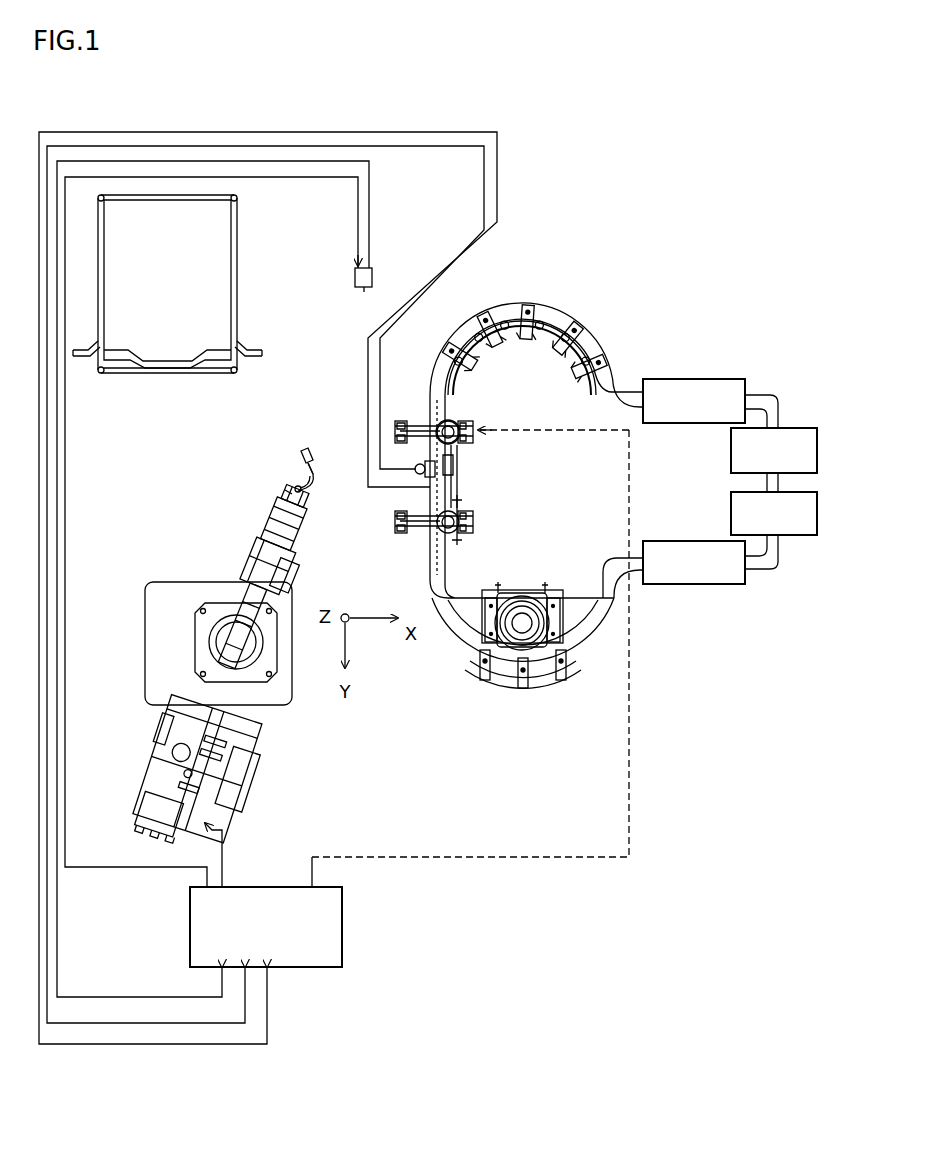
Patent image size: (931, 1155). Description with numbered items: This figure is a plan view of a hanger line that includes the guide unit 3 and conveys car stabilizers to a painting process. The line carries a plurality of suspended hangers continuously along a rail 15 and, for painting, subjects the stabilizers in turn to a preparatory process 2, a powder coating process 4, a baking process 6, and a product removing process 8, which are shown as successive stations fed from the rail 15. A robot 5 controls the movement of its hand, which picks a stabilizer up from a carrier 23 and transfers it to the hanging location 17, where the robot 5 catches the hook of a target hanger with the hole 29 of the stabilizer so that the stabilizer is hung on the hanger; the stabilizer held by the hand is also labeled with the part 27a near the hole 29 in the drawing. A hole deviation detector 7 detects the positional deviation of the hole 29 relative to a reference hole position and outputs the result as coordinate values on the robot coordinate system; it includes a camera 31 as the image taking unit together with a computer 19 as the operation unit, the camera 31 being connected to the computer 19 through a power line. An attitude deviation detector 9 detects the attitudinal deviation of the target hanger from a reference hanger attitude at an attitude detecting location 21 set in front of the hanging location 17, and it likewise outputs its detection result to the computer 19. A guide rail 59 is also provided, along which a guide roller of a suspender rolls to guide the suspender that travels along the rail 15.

The preparatory process 2 is at (695, 585).
The guide unit 3 is at (478, 418).
The powder coating process 4 is at (790, 537).
The robot 5 is at (212, 549).
The baking process 6 is at (790, 428).
The hole deviation detector 7 is at (350, 268).
The product removing process 8 is at (697, 378).
The attitude deviation detector 9 is at (450, 465).
The rail 15 is at (553, 317).
The hanging location 17 is at (402, 492).
The computer 19 is at (344, 925).
The attitude detecting location 21 is at (410, 456).
The carrier 23 is at (113, 375).
The pipe bend 27a is at (297, 462).
The hole 29 is at (300, 460).
The camera 31 is at (373, 277).
The guide rail 59 is at (505, 690).